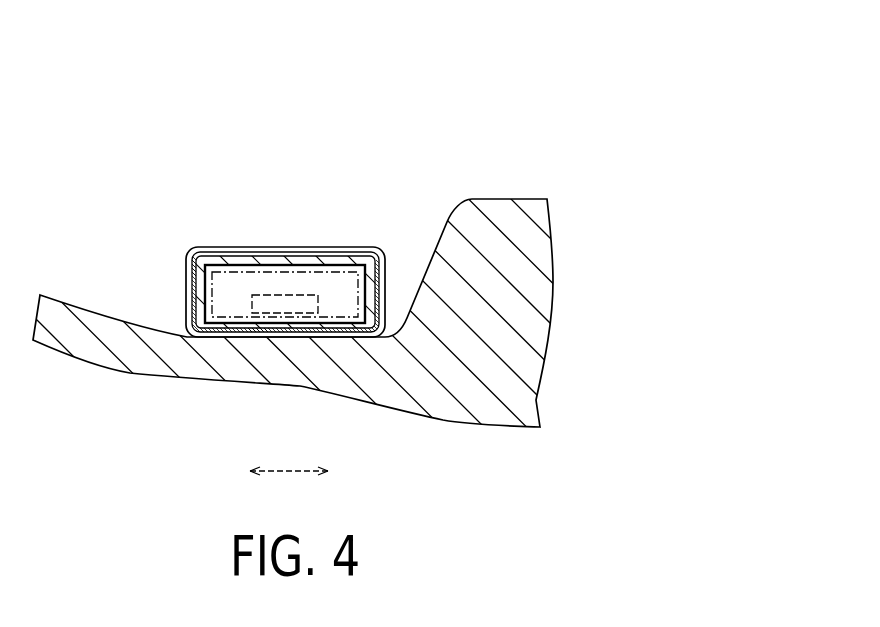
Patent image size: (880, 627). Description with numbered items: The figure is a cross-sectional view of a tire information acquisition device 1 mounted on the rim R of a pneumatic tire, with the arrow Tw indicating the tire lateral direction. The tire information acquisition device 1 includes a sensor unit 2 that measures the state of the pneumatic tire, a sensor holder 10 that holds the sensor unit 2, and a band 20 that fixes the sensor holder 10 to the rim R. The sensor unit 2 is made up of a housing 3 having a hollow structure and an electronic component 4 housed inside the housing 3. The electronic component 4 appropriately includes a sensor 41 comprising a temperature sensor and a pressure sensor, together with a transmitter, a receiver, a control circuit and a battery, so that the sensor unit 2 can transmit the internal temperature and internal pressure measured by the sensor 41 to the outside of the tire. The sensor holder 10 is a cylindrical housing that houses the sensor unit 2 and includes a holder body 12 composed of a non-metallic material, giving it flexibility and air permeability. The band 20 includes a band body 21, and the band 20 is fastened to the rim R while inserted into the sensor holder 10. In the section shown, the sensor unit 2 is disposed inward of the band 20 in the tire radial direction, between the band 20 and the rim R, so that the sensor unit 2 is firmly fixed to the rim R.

The tire information acquisition device 1 is at (271, 236).
The sensor unit 2 is at (217, 342).
The housing 3 is at (193, 268).
The electronic component 4 is at (219, 363).
The sensor 41 is at (287, 305).
The sensor holder 10 is at (233, 235).
The holder body 12 is at (205, 250).
The band 20 is at (283, 250).
The band body 21 is at (332, 250).
The rim R is at (502, 215).
The tire lateral direction Tw is at (289, 470).